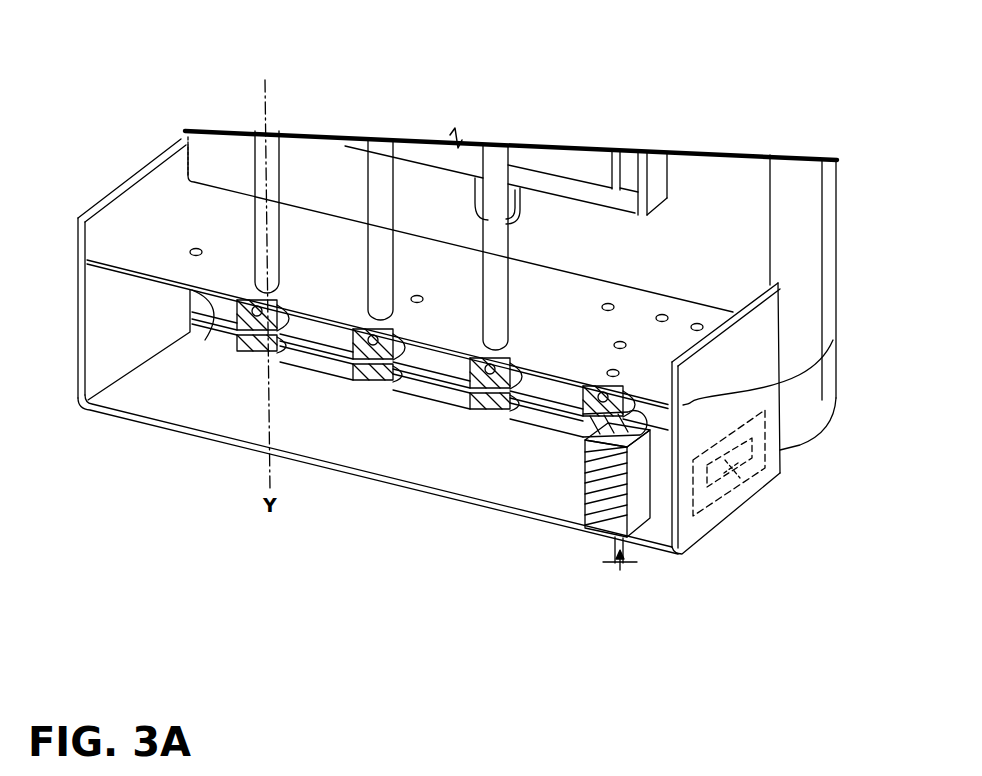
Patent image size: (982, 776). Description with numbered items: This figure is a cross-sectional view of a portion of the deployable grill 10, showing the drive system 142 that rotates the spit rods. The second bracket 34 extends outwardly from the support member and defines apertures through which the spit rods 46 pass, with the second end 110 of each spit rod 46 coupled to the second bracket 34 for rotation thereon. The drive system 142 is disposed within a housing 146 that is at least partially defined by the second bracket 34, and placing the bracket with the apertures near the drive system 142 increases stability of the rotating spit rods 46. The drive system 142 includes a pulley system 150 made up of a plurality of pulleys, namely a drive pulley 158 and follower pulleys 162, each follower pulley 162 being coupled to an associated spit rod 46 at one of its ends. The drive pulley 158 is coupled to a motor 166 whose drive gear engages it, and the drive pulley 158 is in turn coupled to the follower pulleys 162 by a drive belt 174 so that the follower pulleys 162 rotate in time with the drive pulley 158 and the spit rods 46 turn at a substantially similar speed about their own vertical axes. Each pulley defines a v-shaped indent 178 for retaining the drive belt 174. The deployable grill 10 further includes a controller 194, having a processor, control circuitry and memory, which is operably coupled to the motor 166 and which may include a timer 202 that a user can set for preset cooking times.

The deployable grill 10 is at (677, 100).
The second bracket 34 is at (678, 313).
The spit rod 46 is at (253, 186).
The second end 110 is at (380, 311).
The housing 146 is at (758, 325).
The drive pulley 158 is at (770, 375).
The pulley system 150 is at (218, 313).
The v-shaped indent 178 is at (240, 339).
The drive belt 174 is at (440, 378).
The follower pulley 162 is at (495, 378).
The drive system 142 is at (574, 427).
The motor 166 is at (633, 514).
The controller 194 is at (765, 438).
The timer 202 is at (752, 497).